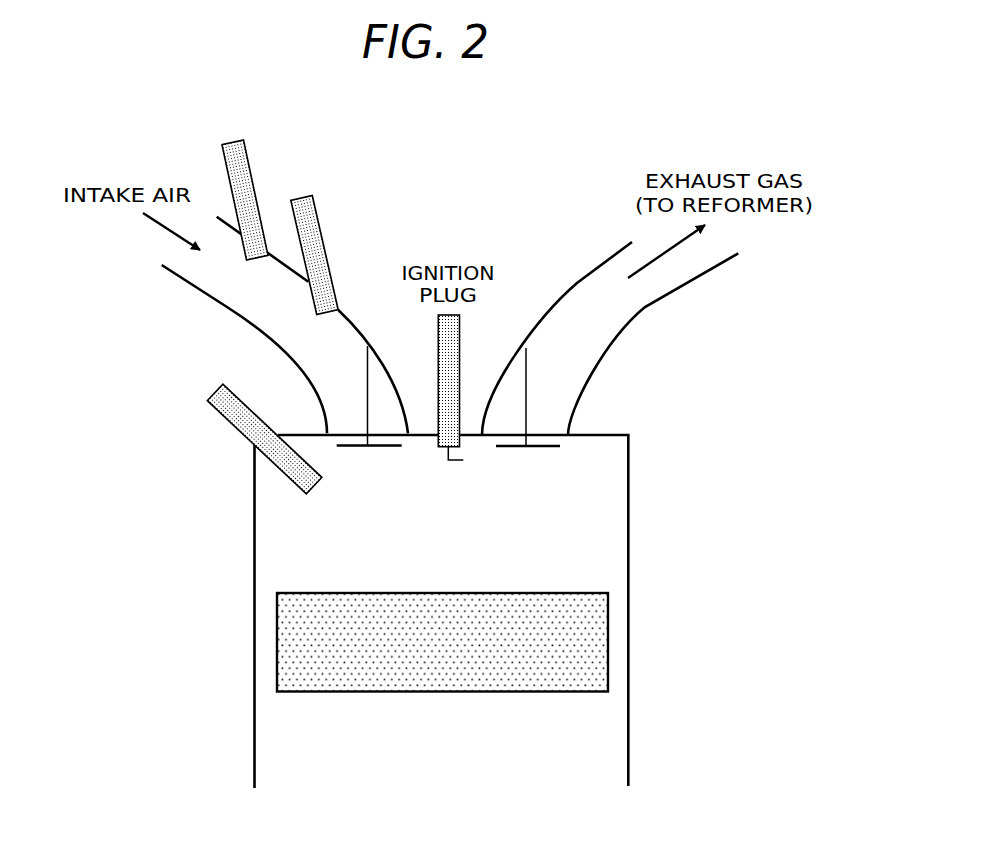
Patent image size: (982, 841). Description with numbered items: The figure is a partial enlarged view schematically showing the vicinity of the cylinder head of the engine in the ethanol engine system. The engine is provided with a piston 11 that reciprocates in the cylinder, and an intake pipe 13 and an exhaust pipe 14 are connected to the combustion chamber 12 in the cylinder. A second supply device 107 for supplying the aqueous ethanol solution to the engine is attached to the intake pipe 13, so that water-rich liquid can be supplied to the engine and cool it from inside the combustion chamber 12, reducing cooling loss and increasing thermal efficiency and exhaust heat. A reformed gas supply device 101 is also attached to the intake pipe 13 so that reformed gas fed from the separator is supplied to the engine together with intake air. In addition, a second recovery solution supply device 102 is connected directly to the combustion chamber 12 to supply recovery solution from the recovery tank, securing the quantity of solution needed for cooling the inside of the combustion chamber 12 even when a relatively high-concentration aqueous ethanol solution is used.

The piston 11 is at (598, 642).
The combustion chamber 12 is at (573, 531).
The intake pipe 13 is at (220, 303).
The exhaust pipe 14 is at (645, 307).
The reformed gas supply device 101 is at (247, 177).
The second recovery solution supply device 102 is at (230, 417).
The second supply device 107 is at (317, 225).